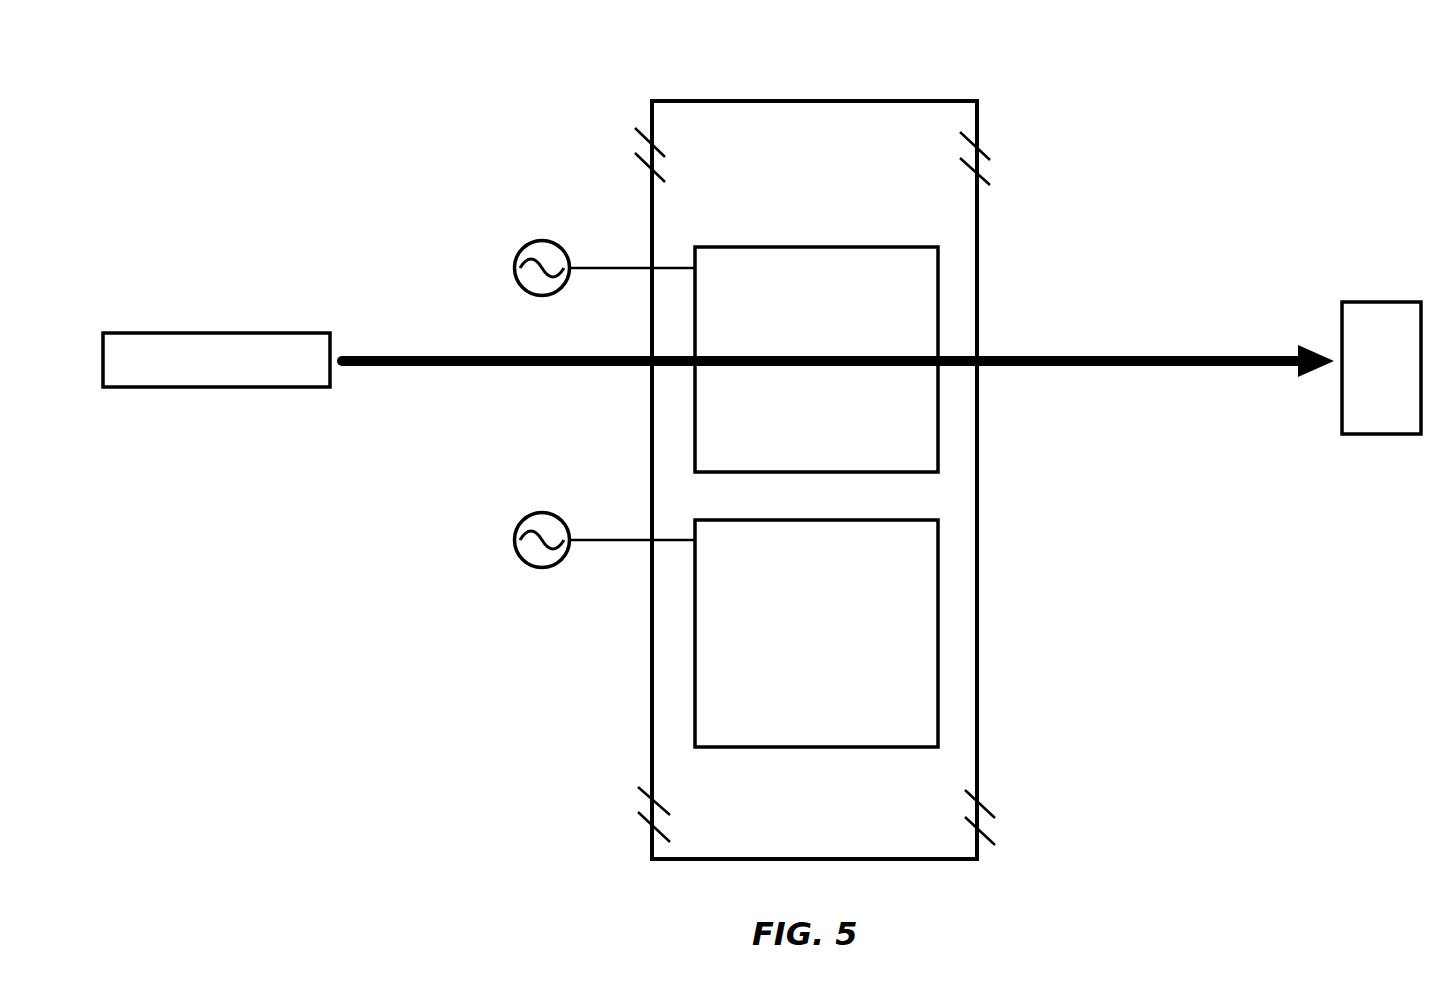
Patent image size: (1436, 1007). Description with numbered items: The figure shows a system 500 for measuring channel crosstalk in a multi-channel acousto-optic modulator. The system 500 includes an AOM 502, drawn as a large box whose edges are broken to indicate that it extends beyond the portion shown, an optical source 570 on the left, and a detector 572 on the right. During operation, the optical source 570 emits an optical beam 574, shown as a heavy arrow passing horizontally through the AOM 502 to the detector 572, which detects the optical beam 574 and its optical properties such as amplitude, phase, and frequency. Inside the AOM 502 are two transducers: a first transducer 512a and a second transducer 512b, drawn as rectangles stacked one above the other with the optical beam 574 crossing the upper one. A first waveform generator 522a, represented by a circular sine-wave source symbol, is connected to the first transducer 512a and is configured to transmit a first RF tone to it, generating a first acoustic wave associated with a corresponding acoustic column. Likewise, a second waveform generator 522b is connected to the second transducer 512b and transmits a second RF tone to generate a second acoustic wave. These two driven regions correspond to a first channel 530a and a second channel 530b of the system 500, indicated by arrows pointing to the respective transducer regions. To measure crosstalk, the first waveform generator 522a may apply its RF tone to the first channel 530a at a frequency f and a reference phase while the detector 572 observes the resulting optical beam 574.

The system 500 is at (216, 77).
The AOM 502 is at (886, 101).
The first transducer 512a is at (938, 553).
The second transducer 512b is at (938, 280).
The first waveform generator 522a is at (536, 516).
The second waveform generator 522b is at (536, 244).
The first channel 530a is at (1038, 538).
The second channel 530b is at (1038, 265).
The optical source 570 is at (256, 333).
The detector 572 is at (1355, 302).
The optical beam 574 is at (1168, 357).